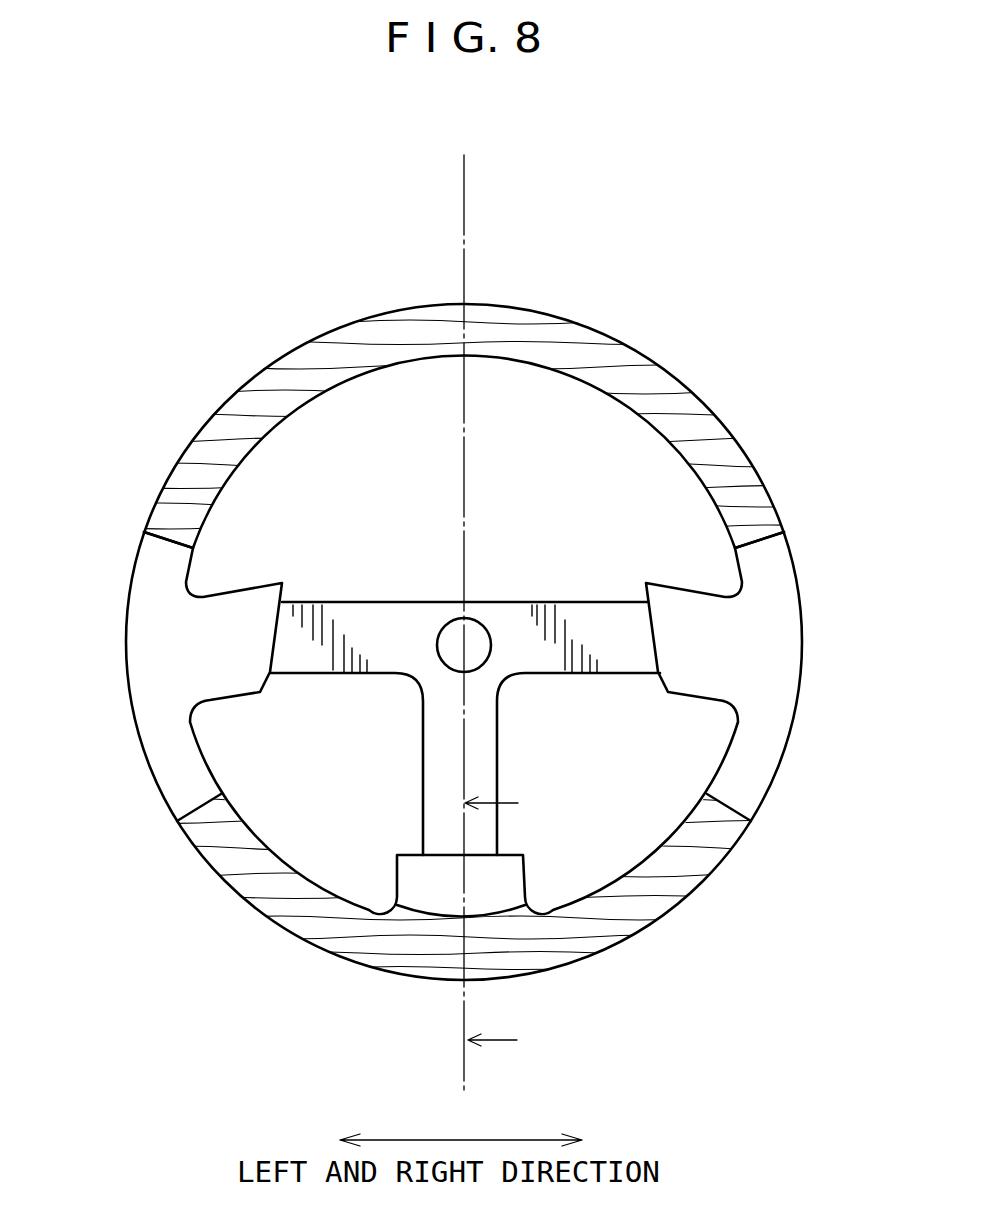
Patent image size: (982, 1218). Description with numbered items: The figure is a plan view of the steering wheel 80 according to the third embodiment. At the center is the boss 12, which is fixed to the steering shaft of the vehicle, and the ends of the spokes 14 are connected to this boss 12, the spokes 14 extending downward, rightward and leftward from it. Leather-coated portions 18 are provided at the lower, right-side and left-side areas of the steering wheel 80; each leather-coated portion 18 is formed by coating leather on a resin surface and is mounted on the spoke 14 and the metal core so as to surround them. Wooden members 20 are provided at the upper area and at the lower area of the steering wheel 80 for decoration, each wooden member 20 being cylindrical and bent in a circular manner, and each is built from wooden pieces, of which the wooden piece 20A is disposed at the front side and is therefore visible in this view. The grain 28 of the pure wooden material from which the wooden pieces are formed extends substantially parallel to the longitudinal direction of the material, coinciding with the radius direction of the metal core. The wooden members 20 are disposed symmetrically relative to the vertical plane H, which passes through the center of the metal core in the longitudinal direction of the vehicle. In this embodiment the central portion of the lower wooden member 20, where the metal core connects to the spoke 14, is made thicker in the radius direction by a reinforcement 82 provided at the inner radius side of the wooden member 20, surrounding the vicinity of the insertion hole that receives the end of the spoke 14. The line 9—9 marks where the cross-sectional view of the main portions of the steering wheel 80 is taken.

The steering wheel 80 is at (235, 227).
The wooden member 20 is at (653, 352).
The wooden piece 20A is at (287, 363).
The grain 28 is at (358, 340).
The leather-coated portion 18 is at (137, 644).
The spoke 14 is at (347, 603).
The boss 12 is at (480, 602).
The reinforcement 82 is at (530, 907).
The line 9— 9 is at (507, 922).
The vertical plane H is at (462, 218).